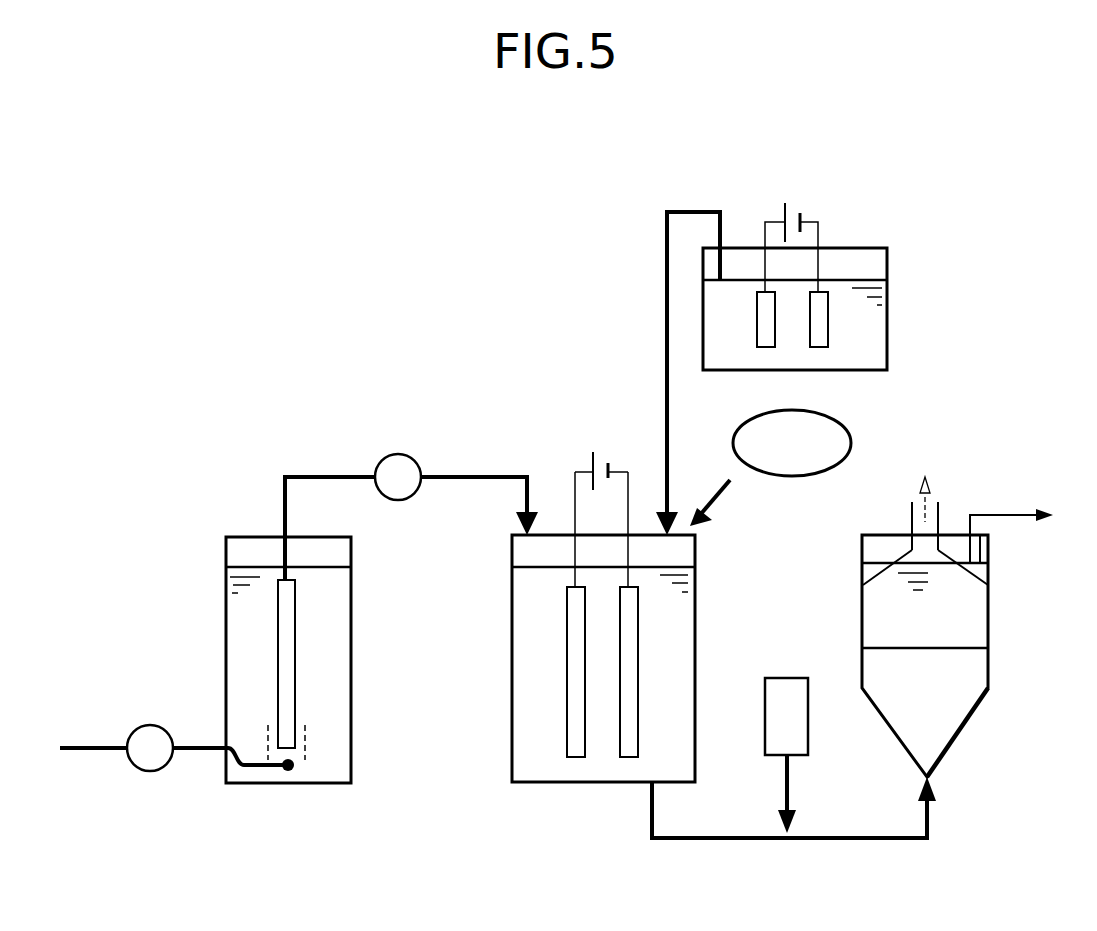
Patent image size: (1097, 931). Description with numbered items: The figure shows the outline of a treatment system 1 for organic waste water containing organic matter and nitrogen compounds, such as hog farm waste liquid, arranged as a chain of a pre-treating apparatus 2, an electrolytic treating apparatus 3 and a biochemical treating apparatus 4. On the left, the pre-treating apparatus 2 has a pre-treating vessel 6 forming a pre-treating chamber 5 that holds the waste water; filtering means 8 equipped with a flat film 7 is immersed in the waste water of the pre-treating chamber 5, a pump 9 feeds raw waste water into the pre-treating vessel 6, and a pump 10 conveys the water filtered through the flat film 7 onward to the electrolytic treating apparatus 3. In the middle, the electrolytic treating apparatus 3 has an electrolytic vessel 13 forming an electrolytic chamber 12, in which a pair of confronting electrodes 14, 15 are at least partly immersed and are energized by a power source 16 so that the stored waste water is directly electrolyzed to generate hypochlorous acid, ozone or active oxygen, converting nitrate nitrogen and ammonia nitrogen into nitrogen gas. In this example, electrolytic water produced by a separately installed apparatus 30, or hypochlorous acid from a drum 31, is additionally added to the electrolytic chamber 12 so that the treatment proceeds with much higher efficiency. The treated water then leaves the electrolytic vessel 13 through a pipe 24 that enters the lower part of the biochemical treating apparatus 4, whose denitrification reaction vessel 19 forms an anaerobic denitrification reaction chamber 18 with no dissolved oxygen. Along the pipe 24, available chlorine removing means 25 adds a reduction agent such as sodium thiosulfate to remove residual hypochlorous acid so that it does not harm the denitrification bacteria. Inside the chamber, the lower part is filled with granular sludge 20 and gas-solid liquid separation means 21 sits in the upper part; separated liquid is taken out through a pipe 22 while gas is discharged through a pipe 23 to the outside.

The treatment system 1 is at (483, 273).
The pre-treating apparatus 2 is at (187, 587).
The electrolytic treating apparatus 3 is at (725, 594).
The biochemical treating apparatus 4 is at (1006, 630).
The pre-treating chamber 5 is at (311, 624).
The pre-treating vessel 6 is at (352, 762).
The flat film 7 is at (297, 653).
The filtering means 8 is at (278, 687).
The pump 9 is at (147, 722).
The pump 10 is at (393, 452).
The electrolytic chamber 12 is at (649, 654).
The electrolytic vessel 13 is at (512, 695).
The electrode 14 is at (565, 623).
The electrode 15 is at (640, 695).
The power source 16 is at (593, 460).
The denitrification reaction chamber 18 is at (909, 626).
The denitrification reaction vessel 19 is at (963, 730).
The granular sludge 20 is at (960, 683).
The gas-solid liquid separation means 21 is at (884, 548).
The pipe 22 is at (1004, 515).
The pipe 23 is at (940, 516).
The pipe 24 is at (713, 842).
The available chlorine removing means 25 is at (785, 677).
The separately installed apparatus 30 is at (913, 260).
The drum 31 is at (832, 432).